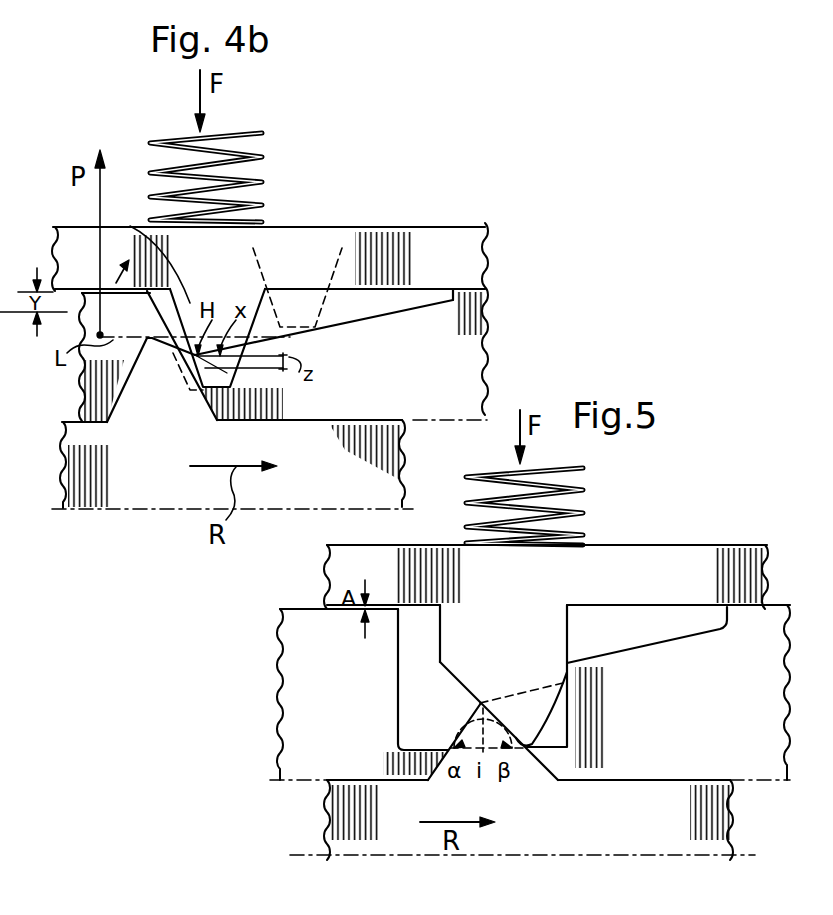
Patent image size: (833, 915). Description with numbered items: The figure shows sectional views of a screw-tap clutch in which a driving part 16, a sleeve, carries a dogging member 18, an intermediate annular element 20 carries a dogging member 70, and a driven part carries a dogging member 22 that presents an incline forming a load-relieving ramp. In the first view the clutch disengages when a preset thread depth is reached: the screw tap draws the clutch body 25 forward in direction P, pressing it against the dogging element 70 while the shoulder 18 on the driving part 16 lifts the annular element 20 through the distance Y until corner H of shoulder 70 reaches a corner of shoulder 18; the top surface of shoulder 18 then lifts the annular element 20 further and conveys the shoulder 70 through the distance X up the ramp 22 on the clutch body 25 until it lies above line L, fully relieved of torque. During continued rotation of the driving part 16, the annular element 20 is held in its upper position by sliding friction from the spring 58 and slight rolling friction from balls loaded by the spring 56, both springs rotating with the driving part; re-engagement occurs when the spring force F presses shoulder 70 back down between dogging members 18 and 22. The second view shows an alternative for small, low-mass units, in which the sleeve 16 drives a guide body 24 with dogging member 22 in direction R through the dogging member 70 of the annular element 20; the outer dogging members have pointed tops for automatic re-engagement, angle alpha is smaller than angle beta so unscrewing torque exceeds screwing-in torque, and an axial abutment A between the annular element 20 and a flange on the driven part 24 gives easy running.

In FIG. 4b, the driving part 16 is at (138, 498).
In FIG. 5, the driving part 16 is at (337, 815).
In FIG. 4b, the dogging member 18 is at (115, 394).
In FIG. 5, the dogging member 18 is at (465, 733).
In FIG. 4b, the annular element 20 is at (407, 232).
In FIG. 5, the annular element 20 is at (668, 563).
In FIG. 4b, the dogging member 22 is at (393, 331).
In FIG. 5, the dogging member 22 is at (610, 667).
In FIG. 5, the driven part 24 is at (346, 685).
In FIG. 4b, the driven part 25 is at (400, 385).
In FIG. 4b, the spring 56 is at (258, 171).
In FIG. 4b, the spring 58 is at (262, 131).
In FIG. 4b, the dogging member 70 is at (139, 238).
In FIG. 5, the dogging member 70 is at (472, 622).